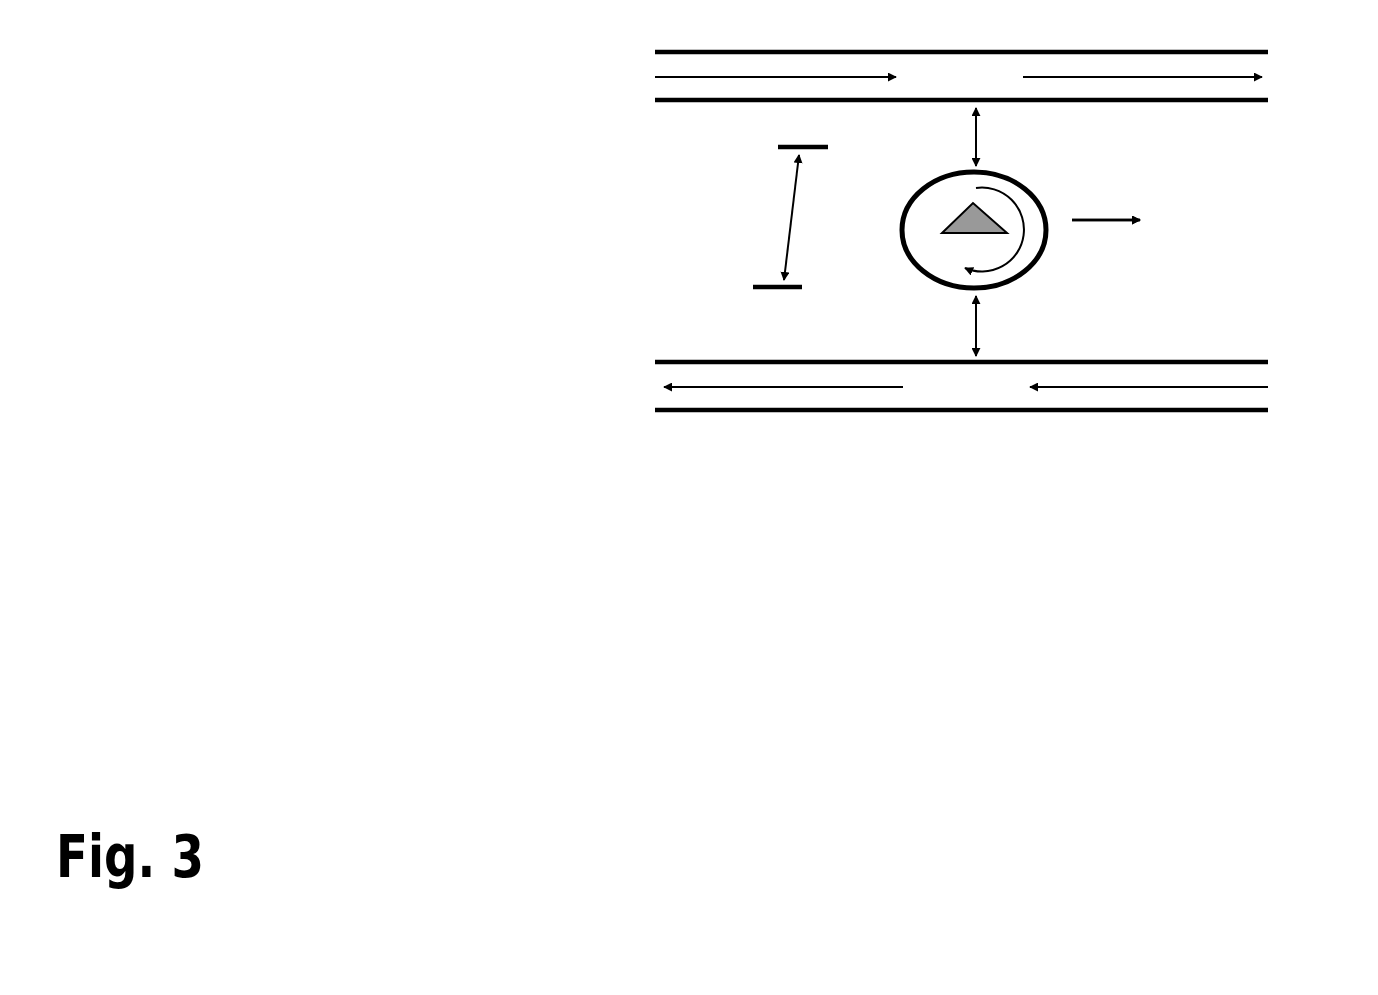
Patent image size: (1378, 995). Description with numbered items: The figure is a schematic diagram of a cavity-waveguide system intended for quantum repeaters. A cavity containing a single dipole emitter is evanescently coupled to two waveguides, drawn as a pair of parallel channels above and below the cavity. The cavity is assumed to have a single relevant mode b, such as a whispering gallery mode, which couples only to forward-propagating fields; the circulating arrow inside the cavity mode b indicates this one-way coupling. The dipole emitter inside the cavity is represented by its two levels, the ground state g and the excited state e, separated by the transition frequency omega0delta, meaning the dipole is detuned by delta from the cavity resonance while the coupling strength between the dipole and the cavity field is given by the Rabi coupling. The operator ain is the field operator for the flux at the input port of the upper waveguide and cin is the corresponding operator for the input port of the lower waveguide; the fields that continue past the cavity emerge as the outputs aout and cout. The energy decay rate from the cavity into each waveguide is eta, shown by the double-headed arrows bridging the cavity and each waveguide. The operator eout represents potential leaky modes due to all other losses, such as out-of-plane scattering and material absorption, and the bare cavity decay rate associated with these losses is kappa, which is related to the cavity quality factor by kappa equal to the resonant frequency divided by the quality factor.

The input field operator of the upper waveguide ain is at (926, 66).
The output field of the upper waveguide aout is at (1190, 65).
The cavity mode b is at (978, 208).
The input field operator of the lower waveguide cin is at (997, 381).
The output field of the lower waveguide cout is at (744, 380).
The leaky mode output operator eout is at (1141, 187).
The cavity field decay rate kappa is at (1106, 246).
The cavity-waveguide energy decay rate eta is at (943, 232).
The excited state of the dipole emitter e is at (765, 140).
The ground state of the dipole emitter g is at (752, 285).
The detuned dipole transition frequency omega0delta is at (727, 217).